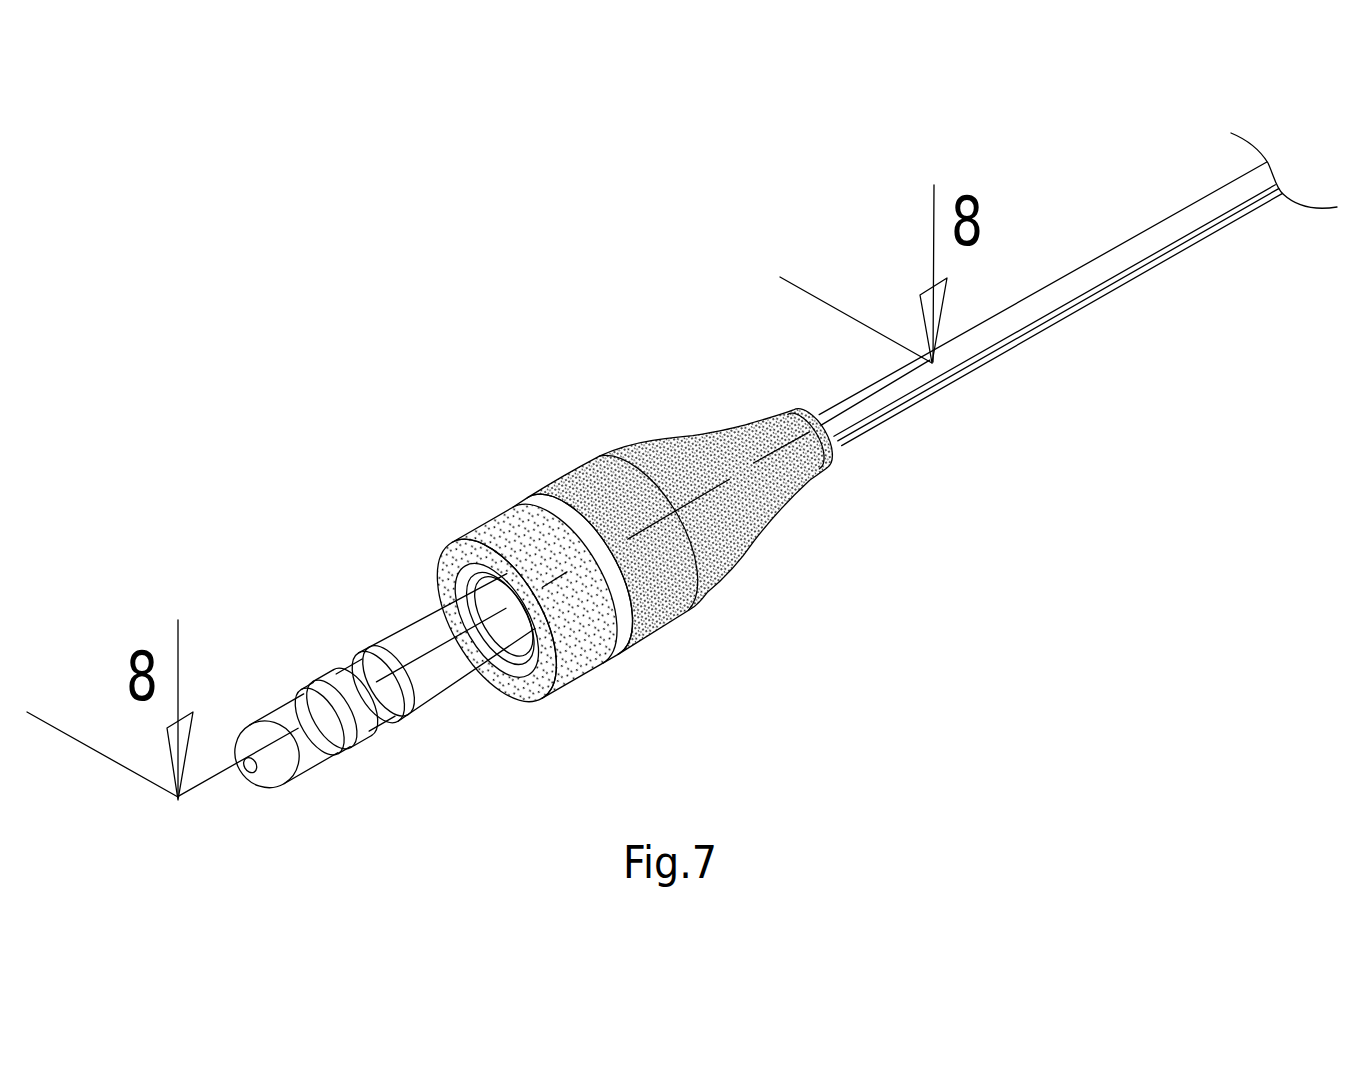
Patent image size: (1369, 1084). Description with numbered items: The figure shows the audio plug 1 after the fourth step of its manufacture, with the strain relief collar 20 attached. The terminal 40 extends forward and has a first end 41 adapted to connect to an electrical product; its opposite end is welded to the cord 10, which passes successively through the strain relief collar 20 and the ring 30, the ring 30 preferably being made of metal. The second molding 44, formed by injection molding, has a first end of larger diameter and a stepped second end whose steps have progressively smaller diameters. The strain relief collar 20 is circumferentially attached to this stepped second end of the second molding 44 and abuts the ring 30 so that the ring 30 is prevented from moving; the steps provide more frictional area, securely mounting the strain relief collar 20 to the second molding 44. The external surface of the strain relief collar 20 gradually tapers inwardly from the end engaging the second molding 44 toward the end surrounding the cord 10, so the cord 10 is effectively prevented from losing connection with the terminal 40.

The audio plug 1 is at (780, 486).
The cord 10 is at (1233, 208).
The strain relief collar 20 is at (760, 520).
The ring 30 is at (630, 617).
The terminal 40 is at (447, 677).
The first end 41 is at (303, 745).
The second molding 44 is at (573, 635).